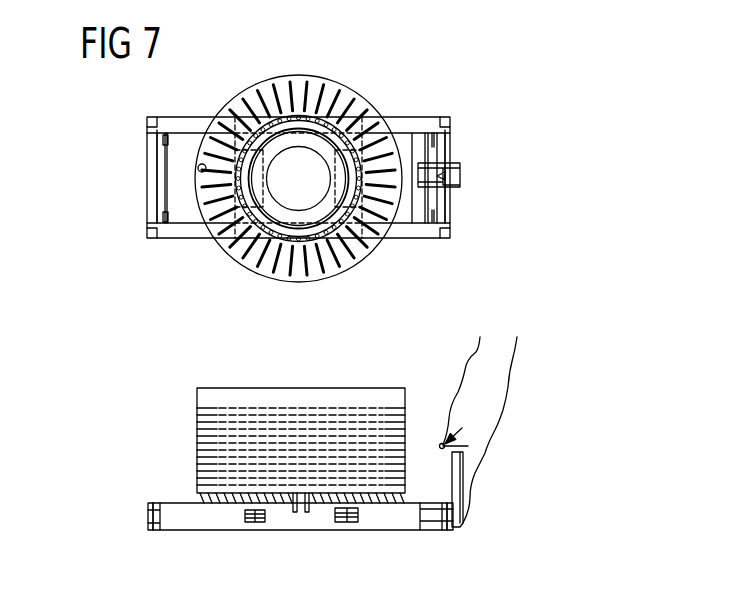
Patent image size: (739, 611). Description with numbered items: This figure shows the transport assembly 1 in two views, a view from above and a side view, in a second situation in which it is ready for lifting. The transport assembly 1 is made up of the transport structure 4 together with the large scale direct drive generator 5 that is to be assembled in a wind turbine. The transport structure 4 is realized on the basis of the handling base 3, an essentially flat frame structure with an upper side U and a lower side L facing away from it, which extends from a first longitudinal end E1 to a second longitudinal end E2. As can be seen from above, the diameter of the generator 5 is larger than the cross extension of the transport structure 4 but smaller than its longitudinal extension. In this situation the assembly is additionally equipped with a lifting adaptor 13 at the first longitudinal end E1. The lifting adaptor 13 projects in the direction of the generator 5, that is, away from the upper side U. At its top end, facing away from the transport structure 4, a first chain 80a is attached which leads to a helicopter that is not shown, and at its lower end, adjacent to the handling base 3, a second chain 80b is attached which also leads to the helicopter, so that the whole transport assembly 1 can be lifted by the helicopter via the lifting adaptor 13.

The transport assembly 1 is at (467, 75).
The handling base 3 is at (410, 236).
The transport structure 4 is at (202, 255).
The generator 5 is at (292, 272).
The lifting adaptor 13 is at (455, 163).
The first longitudinal end E1 is at (450, 202).
The second longitudinal end E2 is at (112, 527).
The first chain 80a is at (462, 370).
The second chain 80b is at (510, 396).
The upper side U is at (417, 493).
The lower side L is at (270, 550).